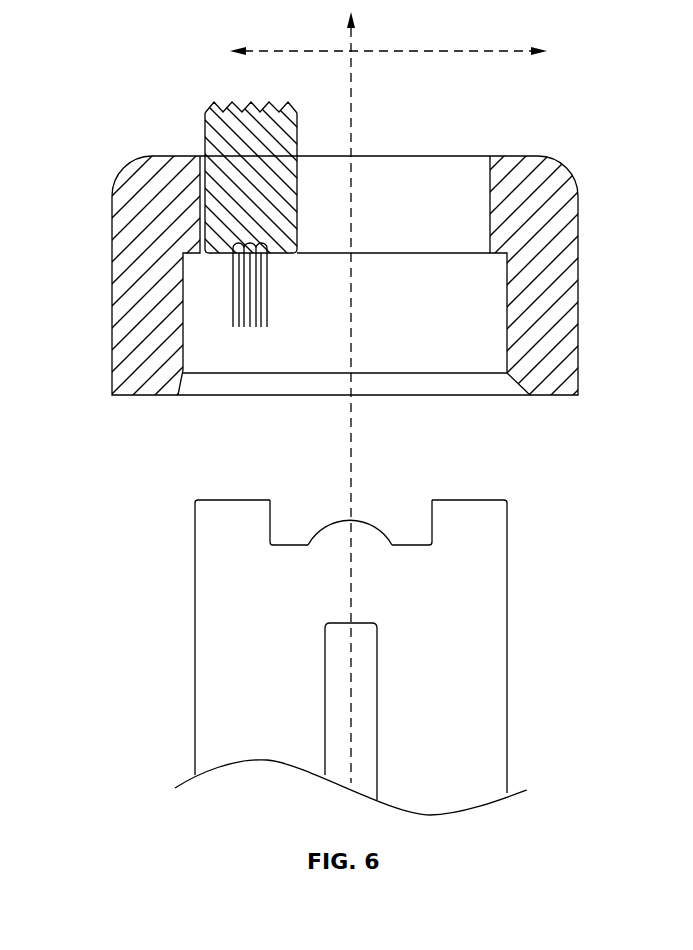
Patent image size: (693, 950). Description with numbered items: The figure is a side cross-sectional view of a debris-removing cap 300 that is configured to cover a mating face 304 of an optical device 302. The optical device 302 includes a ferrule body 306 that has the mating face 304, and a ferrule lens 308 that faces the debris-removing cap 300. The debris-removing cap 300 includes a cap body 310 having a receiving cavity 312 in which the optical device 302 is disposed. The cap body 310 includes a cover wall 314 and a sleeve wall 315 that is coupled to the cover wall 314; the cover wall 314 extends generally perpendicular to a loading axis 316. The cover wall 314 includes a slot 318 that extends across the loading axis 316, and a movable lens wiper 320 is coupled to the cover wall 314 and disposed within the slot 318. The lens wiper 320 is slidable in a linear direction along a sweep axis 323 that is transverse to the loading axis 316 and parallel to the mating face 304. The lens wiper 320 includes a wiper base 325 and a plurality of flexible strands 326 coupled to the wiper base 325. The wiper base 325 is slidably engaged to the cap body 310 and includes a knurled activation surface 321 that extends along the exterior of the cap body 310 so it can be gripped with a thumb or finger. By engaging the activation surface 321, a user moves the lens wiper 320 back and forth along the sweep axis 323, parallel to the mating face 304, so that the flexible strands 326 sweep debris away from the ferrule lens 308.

The debris-removing cap 300 is at (598, 117).
The optical device 302 is at (352, 640).
The mating face 304 is at (380, 505).
The ferrule body 306 is at (195, 620).
The ferrule lens 308 is at (332, 518).
The cap body 310 is at (356, 257).
The receiving cavity 312 is at (442, 346).
The cover wall 314 is at (173, 175).
The sleeve wall 315 is at (130, 338).
The loading axis 316 is at (351, 77).
The slot 318 is at (423, 213).
The lens wiper 320 is at (305, 190).
The activation surface 321 is at (245, 158).
The sweep axis 323 is at (525, 55).
The wiper base 325 is at (245, 118).
The flexible strands 326 is at (277, 298).